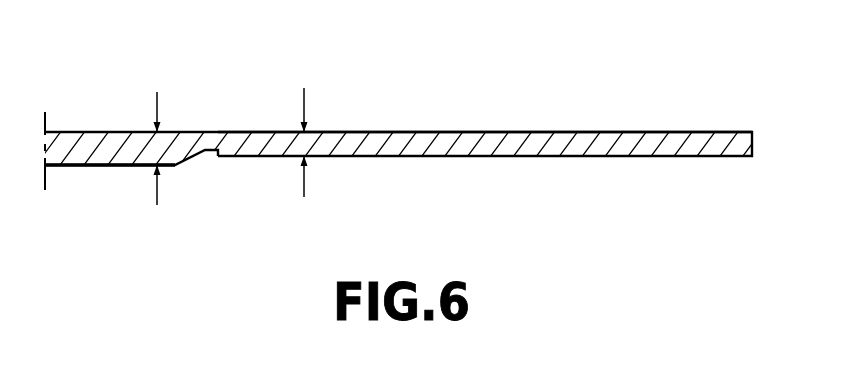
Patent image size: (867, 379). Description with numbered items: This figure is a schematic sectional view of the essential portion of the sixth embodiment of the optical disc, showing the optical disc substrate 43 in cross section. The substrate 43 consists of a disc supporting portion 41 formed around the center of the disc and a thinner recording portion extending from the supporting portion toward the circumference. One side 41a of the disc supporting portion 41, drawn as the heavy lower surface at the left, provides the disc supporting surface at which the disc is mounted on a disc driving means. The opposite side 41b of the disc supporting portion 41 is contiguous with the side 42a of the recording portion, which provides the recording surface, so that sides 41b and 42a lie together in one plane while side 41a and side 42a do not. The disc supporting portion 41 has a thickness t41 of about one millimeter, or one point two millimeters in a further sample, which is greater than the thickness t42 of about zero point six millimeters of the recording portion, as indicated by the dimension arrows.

The disc supporting portion 41 is at (67, 133).
The side of the disc supporting portion 41a is at (90, 167).
The side of the disc supporting portion opposite to side 41a 41b is at (115, 135).
The side of the recording portion 42a is at (538, 131).
The optical disc substrate 43 is at (673, 124).
The thickness of the disc supporting portion t41 is at (179, 158).
The thickness of the recording portion t42 is at (328, 152).